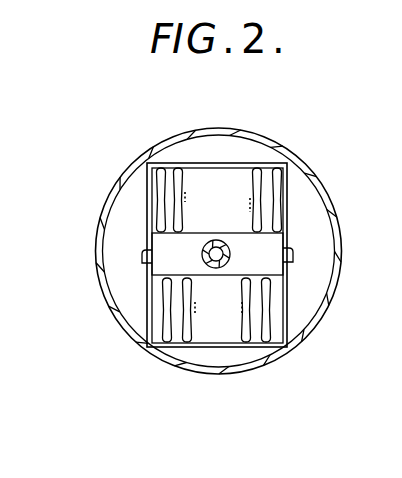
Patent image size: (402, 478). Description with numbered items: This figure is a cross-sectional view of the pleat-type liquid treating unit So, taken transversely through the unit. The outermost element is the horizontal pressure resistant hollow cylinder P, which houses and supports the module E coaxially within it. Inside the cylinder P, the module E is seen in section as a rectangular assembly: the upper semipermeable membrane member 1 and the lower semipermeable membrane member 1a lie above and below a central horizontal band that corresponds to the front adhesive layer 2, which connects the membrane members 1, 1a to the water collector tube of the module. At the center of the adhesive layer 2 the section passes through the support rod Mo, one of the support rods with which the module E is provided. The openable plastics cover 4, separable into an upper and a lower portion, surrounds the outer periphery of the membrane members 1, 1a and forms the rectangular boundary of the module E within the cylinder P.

The liquid treating unit So is at (147, 132).
The horizontal pressure resistant hollow cylinder P is at (207, 130).
The module E is at (233, 175).
The upper semipermeable membrane member 1 is at (195, 198).
The lower semipermeable membrane member 1a is at (188, 300).
The front adhesive layer 2 is at (172, 260).
The support rod Mo is at (230, 260).
The openable plastics cover 4 is at (215, 348).